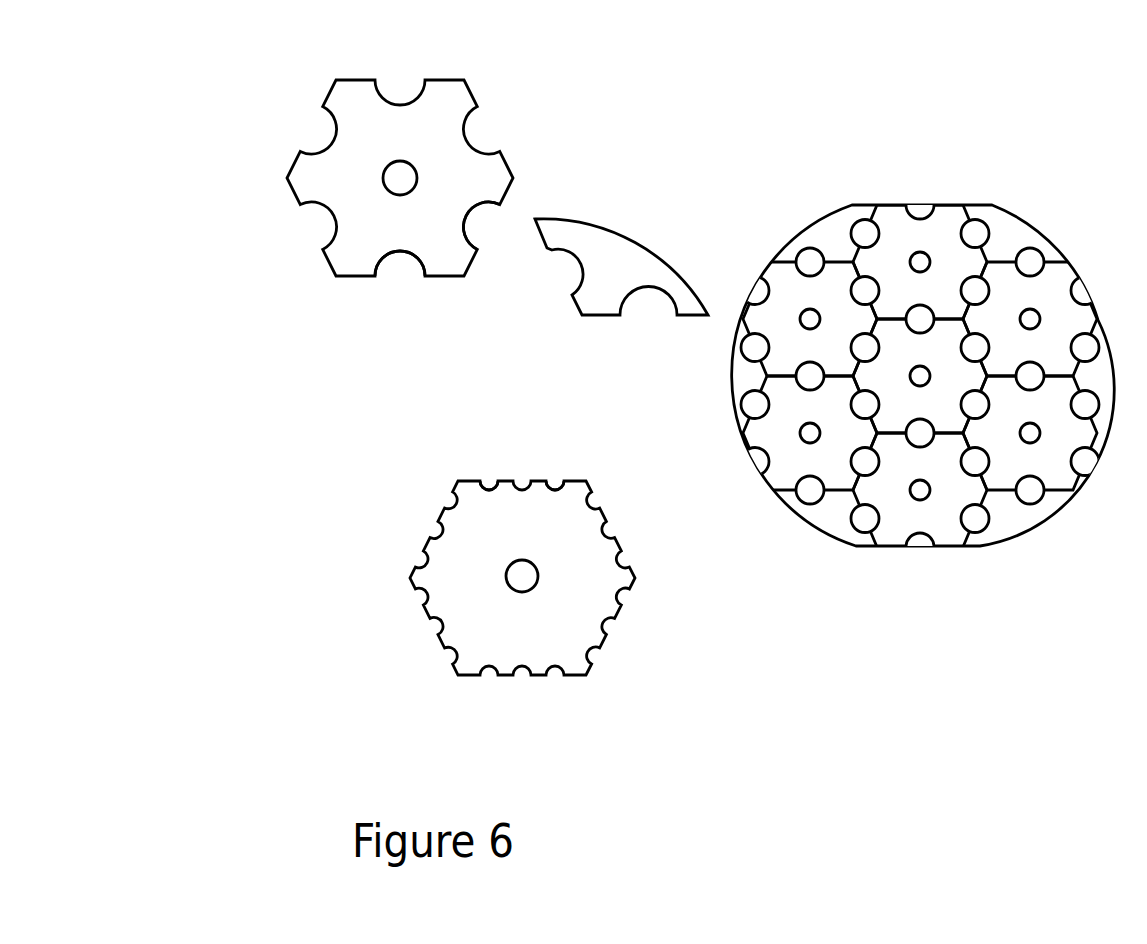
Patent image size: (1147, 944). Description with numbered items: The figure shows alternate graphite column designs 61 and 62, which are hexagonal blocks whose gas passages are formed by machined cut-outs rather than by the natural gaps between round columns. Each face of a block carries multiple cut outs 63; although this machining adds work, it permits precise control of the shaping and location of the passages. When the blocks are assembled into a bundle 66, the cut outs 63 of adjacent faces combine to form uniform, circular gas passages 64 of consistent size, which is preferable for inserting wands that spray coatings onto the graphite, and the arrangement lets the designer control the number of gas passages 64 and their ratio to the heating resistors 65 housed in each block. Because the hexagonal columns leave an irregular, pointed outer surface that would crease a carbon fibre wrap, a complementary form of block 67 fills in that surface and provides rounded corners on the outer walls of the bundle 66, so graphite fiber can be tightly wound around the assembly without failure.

The graphite column design 61 is at (318, 77).
The graphite column design 62 is at (410, 527).
The cut outs 63 is at (492, 205).
The gas passages 64 is at (866, 405).
The heating resistors 65 is at (919, 489).
The bundle 66 is at (908, 202).
The complementary form of block 67 is at (645, 225).